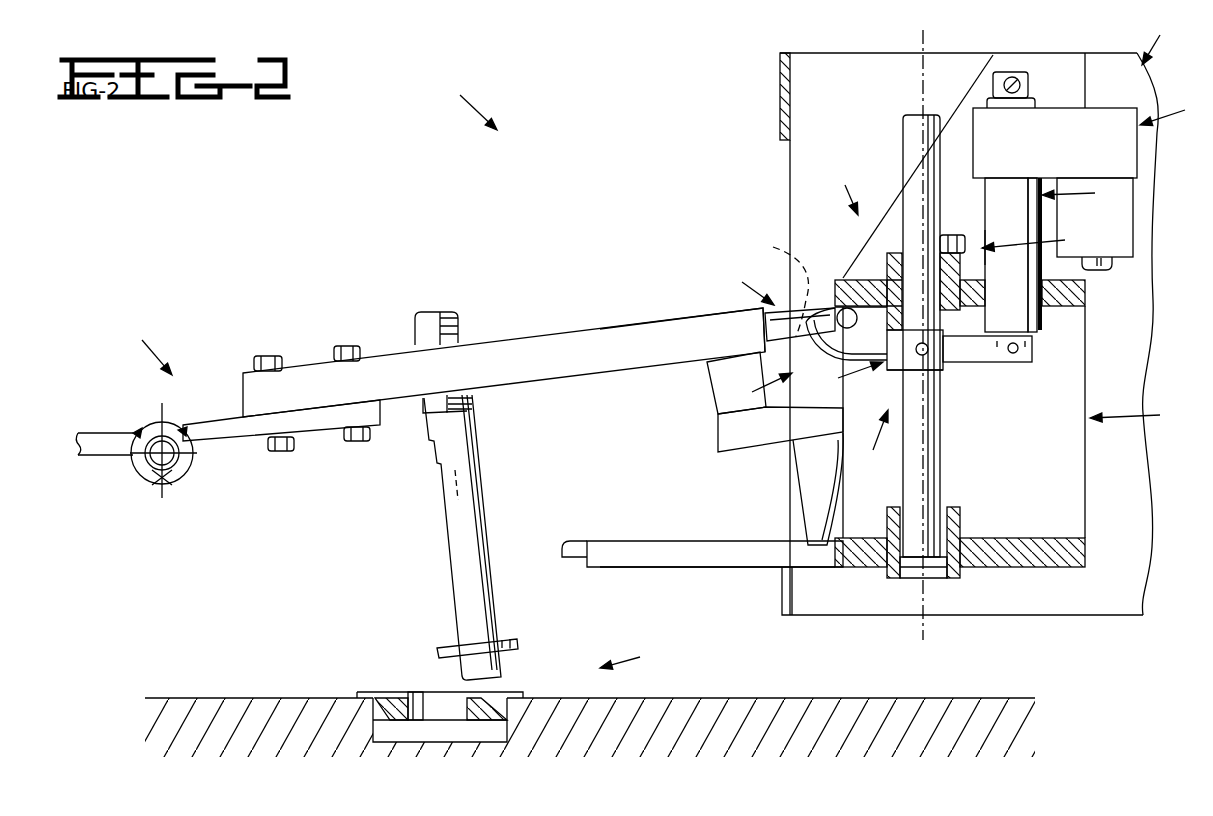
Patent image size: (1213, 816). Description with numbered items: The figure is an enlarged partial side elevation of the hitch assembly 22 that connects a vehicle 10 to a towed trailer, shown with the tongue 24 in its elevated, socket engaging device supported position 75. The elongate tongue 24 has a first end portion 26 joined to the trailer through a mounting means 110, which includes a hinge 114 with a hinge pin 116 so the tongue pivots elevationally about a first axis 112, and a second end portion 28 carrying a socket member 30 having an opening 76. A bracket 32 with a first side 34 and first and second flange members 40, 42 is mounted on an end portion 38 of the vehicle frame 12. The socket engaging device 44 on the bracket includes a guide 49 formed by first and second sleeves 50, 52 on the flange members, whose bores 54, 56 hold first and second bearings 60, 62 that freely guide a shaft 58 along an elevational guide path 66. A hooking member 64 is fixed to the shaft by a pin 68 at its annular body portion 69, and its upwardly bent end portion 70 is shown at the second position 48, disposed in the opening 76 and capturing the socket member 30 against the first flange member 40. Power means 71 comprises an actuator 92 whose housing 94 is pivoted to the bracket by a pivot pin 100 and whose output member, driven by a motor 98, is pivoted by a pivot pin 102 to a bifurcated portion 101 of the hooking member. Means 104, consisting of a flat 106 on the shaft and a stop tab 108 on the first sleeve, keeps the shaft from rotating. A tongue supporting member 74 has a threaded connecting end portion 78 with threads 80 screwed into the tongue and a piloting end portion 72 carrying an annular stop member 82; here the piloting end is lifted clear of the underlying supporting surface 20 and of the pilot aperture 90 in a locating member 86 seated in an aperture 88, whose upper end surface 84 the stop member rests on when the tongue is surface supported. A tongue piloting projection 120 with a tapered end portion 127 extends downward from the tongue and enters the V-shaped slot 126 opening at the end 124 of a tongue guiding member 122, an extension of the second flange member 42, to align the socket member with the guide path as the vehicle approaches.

The vehicle 10 is at (979, 36).
The frame 12 is at (1130, 305).
The underlying supporting surface 20 is at (770, 698).
The hitch assembly 22 is at (461, 105).
The tongue 24 is at (535, 325).
The first end portion 26 is at (256, 386).
The second end portion 28 is at (720, 322).
The socket member 30 is at (774, 299).
The bracket 32 is at (1135, 295).
The first side 34 is at (1082, 458).
The end portion of the frame 38 is at (847, 70).
The first flange member 40 is at (1075, 292).
The second flange member 42 is at (1085, 548).
The socket engaging device 44 is at (839, 186).
The second position 48 is at (749, 383).
The guide 49 is at (865, 422).
The first sleeve 50 is at (890, 262).
The second sleeve 52 is at (955, 540).
The bore 54 is at (941, 313).
The bore 56 is at (940, 575).
The shaft 58 is at (943, 442).
The first bearing 60 is at (888, 278).
The second bearing 62 is at (955, 515).
The hooking member 64 is at (846, 351).
The guide path 66 is at (932, 50).
The pin 68 is at (935, 350).
The annular body portion 69 is at (925, 368).
The bent end portion 70 is at (820, 345).
The power means 71 is at (1091, 134).
The piloting end portion 72 is at (505, 660).
The tongue supporting member 74 is at (468, 497).
The socket engaging device supported position 75 is at (637, 656).
The opening 76 is at (776, 283).
The connecting end portion 78 is at (458, 318).
The threads 80 is at (430, 345).
The stop member 82 is at (515, 640).
The upper end surface 84 is at (395, 692).
The locating member 86 is at (487, 700).
The aperture 88 is at (385, 725).
The pilot aperture 90 is at (420, 692).
The actuator 92 is at (1073, 255).
The housing 94 is at (990, 234).
The motor 98 is at (1123, 222).
The pivot pin 100 is at (1020, 74).
The bifurcated portion 101 is at (1030, 355).
The pivot pin 102 is at (1030, 343).
The means for maintaining the shaft from rotation 104 is at (1040, 240).
The flat 106 is at (940, 156).
The stop tab 108 is at (958, 240).
The mounting means 110 is at (146, 413).
The first axis 112 is at (150, 474).
The hinge 114 is at (143, 423).
The hinge pin 116 is at (192, 454).
The tongue piloting projection 120 is at (722, 415).
The tongue guiding member 122 is at (680, 540).
The end 124 is at (590, 552).
The slot 126 is at (700, 580).
The tapered end portion 127 is at (808, 475).